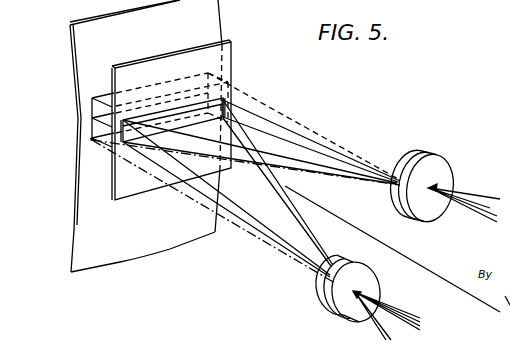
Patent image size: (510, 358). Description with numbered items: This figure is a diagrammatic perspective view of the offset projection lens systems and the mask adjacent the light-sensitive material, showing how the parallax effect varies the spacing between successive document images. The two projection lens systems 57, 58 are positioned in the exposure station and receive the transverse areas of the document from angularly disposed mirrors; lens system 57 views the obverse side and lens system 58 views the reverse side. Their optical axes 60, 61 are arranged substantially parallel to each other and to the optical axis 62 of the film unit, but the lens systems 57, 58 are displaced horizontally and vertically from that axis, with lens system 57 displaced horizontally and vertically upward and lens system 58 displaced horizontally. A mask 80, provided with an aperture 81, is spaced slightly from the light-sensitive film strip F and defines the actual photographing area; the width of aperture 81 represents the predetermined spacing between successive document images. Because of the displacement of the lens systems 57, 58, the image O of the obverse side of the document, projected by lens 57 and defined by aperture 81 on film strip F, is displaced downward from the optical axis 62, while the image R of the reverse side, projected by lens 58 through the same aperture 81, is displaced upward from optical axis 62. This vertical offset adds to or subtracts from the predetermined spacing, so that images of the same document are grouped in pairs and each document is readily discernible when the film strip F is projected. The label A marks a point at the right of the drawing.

The film strip F is at (80, 52).
The image of the reverse side of the document R is at (98, 97).
The image of the obverse side of the document O is at (92, 140).
The mask 80 is at (230, 61).
The aperture 81 is at (131, 142).
The projection lens system 57 is at (432, 155).
The projection lens system 58 is at (330, 306).
The optical axis 60 is at (476, 212).
The optical axis 61 is at (385, 310).
The optical axis of the film unit 62 is at (418, 265).
The point A is at (501, 192).